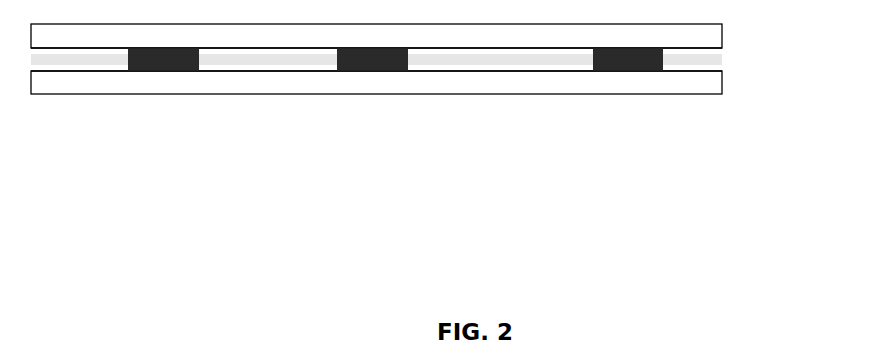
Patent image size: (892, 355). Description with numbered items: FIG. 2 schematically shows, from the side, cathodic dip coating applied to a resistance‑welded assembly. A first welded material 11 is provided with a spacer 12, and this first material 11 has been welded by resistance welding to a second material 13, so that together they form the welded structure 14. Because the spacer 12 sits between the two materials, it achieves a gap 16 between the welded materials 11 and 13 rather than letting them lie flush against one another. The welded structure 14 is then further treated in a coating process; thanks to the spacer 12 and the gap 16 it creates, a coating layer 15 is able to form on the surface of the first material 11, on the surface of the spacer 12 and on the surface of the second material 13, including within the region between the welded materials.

The first welded material 11 is at (681, 80).
The spacer 12 is at (355, 53).
The second material 13 is at (268, 37).
The welded structure 14 is at (439, 140).
The coating layer 15 is at (545, 53).
The gap 16 is at (703, 61).